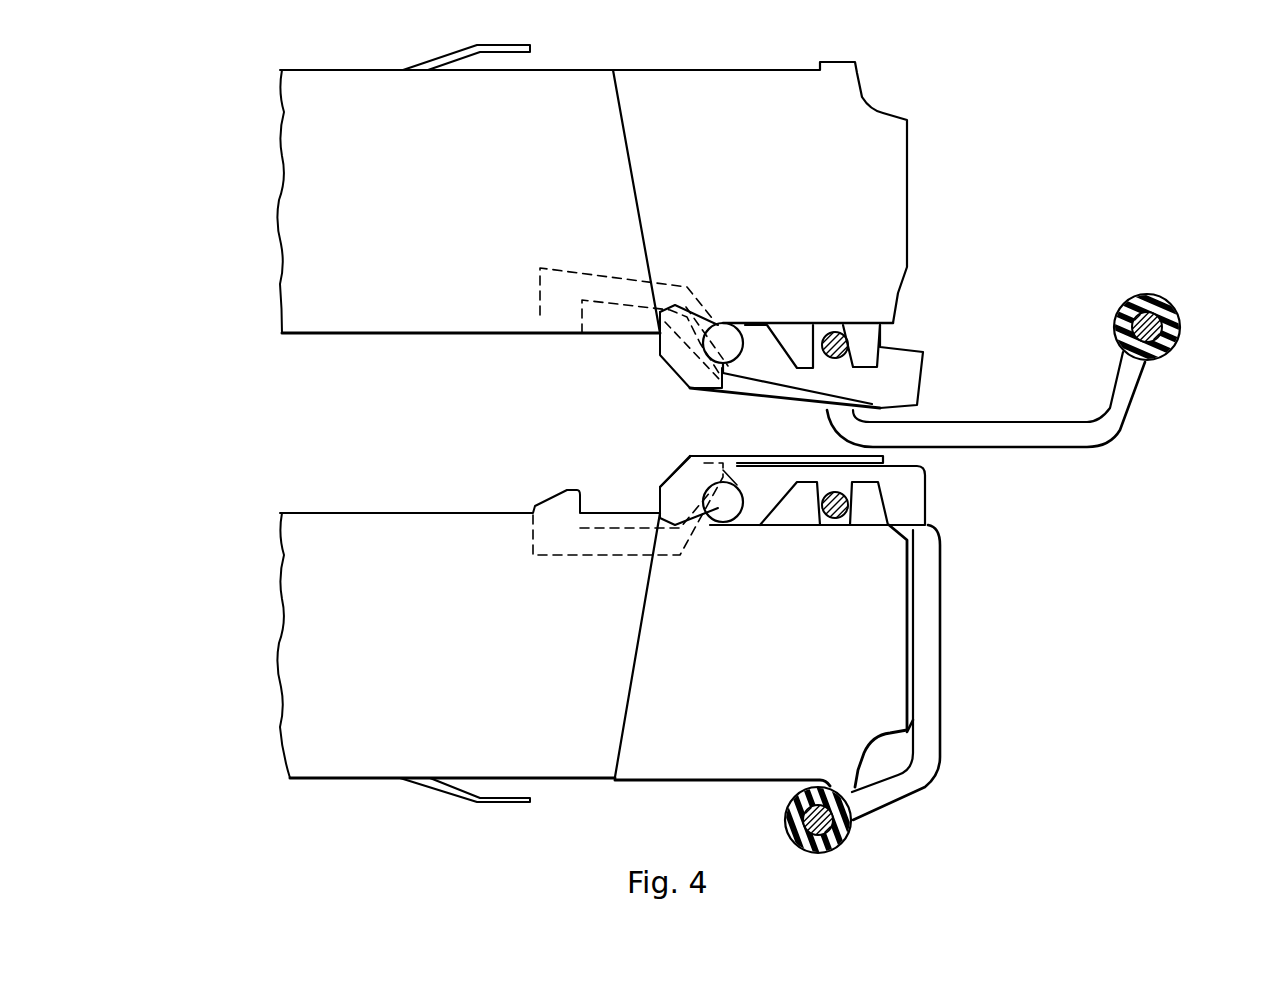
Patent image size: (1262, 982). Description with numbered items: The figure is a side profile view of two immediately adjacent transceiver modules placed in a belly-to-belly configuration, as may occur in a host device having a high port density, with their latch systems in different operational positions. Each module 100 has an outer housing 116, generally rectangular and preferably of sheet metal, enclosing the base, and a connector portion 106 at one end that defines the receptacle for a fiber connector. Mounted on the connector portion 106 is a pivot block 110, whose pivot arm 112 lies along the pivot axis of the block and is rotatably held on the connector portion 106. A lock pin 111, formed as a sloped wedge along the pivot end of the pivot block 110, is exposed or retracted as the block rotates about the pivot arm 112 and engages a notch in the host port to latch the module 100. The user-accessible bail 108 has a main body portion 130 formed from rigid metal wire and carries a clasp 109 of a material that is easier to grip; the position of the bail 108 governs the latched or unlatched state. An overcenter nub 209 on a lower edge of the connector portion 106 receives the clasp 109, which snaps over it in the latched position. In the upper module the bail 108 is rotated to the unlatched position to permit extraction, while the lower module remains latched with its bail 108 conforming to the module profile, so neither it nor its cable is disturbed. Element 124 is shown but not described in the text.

The module 100 is at (1008, 261).
The connector portion 106 is at (863, 178).
The bail 108 is at (1046, 408).
The clasp 109 is at (1166, 296).
The pivot block 110 is at (914, 370).
The lock pin 111 is at (563, 313).
The pivot arm 112 is at (716, 340).
The outer housing 116 is at (347, 243).
The latch body 124 is at (852, 345).
The main body portion 130 is at (828, 332).
The nub 209 is at (890, 773).